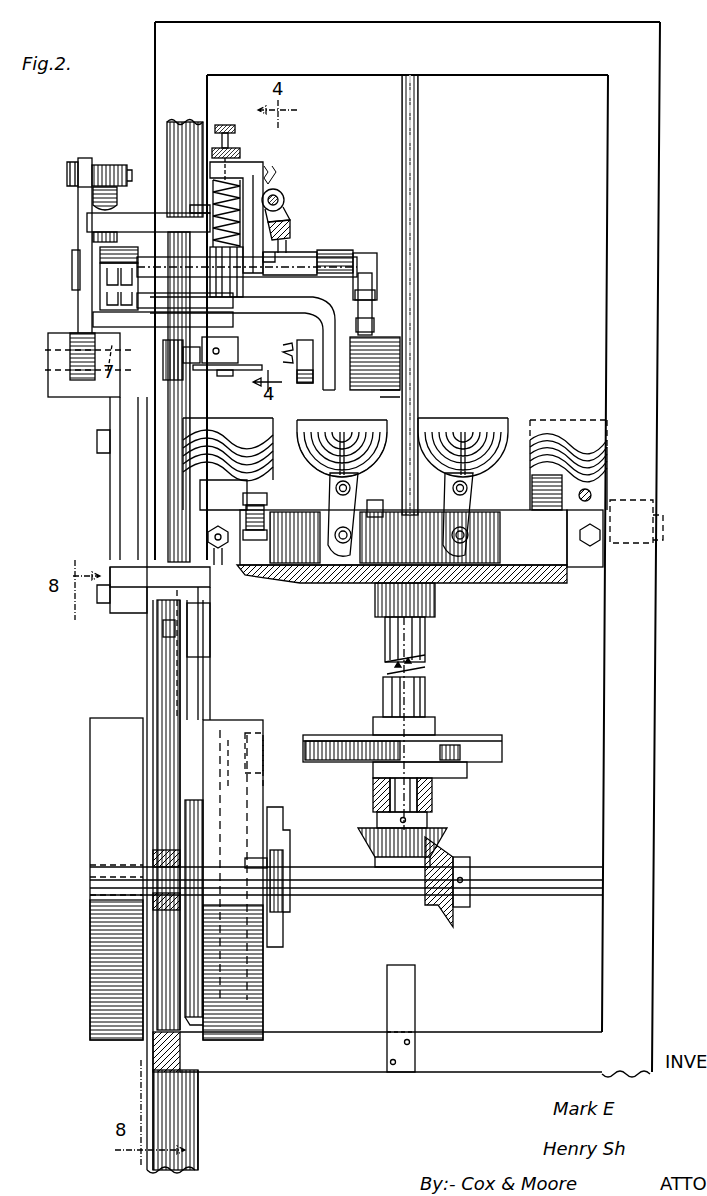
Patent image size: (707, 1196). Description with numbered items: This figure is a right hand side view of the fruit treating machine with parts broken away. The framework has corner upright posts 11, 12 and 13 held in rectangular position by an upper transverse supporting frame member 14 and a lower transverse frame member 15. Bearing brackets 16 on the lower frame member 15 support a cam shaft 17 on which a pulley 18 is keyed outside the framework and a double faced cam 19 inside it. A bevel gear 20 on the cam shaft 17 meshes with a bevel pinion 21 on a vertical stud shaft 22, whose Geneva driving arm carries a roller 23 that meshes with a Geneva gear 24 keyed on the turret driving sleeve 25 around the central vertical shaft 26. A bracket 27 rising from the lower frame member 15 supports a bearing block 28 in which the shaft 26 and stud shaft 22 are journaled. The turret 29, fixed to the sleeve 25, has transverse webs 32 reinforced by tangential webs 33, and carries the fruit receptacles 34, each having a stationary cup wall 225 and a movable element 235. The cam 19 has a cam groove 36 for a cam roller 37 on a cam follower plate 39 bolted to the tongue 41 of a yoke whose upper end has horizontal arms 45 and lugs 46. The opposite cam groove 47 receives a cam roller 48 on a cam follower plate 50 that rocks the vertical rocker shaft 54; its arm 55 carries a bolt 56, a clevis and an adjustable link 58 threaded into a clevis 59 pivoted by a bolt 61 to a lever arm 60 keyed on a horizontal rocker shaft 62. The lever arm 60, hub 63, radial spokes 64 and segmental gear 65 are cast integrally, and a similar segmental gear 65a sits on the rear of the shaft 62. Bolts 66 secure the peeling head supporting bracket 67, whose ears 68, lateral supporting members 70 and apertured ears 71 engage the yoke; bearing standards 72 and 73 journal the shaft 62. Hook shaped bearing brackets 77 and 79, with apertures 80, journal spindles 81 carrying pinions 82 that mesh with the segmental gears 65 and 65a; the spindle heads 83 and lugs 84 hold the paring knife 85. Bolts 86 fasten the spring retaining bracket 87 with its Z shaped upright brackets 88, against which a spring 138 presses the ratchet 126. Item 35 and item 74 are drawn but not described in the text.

The corner upright post 11 is at (656, 101).
The corner upright post 12 is at (172, 121).
The corner upright post 13 is at (168, 58).
The upper transverse supporting frame member 14 is at (560, 80).
The lower transverse frame member 15 is at (548, 1038).
The bearing brackets 16 is at (160, 961).
The cam shaft 17 is at (552, 889).
The pulley 18 is at (105, 920).
The double faced cam 19 is at (245, 1017).
The bevel gear 20 is at (437, 917).
The bevel pinion 21 is at (365, 848).
The vertical stud shaft 22 is at (428, 812).
The roller 23 is at (460, 752).
The Geneva gear 24 is at (490, 735).
The turret driving sleeve 25 is at (426, 694).
The central vertical shaft 26 is at (418, 133).
The bracket 27 is at (416, 990).
The bearing block 28 is at (433, 795).
The turret 29 is at (500, 590).
The transverse webs 32 is at (432, 575).
The tangential webs 33 is at (545, 553).
The receptacles 34 is at (510, 408).
The nut 35 is at (580, 533).
The cam groove 36 is at (212, 737).
The cam roller 37 is at (223, 743).
The cam follower plate 39 is at (190, 676).
The tongue 41 is at (197, 600).
The horizontal arms 45 is at (100, 338).
The lugs 46 is at (100, 328).
The cam groove 47 is at (258, 737).
The cam roller 48 is at (292, 829).
The cam follower plate 50 is at (285, 931).
The vertical rocker shaft 54 is at (200, 578).
The arm 55 is at (100, 222).
The bolt 56 is at (93, 238).
The adjustable link 58 is at (95, 200).
The clevis 59 is at (112, 165).
The lever arm 60 is at (82, 159).
The bolt 61 is at (70, 160).
The horizontal rocker shaft 62 is at (92, 266).
The hub 63 is at (72, 262).
The radial spokes 64 is at (70, 345).
The segmental gear 65 is at (70, 378).
The segmental gear 65a is at (376, 332).
The bolts 66 is at (273, 295).
The peeling head supporting bracket 67 is at (372, 300).
The ears 68 is at (119, 286).
The lateral supporting members 70 is at (150, 297).
The apertured ears 71 is at (290, 300).
The bearing standard 72 is at (112, 250).
The bearing standard 73 is at (338, 258).
The block 74 is at (292, 256).
The hook shaped bearing brackets 77 is at (380, 386).
The hook shaped bearing brackets 79 is at (58, 397).
The apertures 80 is at (108, 368).
The spindles 81 is at (147, 393).
The pinions 82 is at (72, 378).
The heads 83 is at (178, 360).
The lugs 84 is at (292, 366).
The paring knife 85 is at (215, 372).
The bolts 86 is at (300, 280).
The spring retaining bracket 87 is at (266, 162).
The Z shaped upright brackets 88 is at (247, 165).
The ratchet 126 is at (283, 200).
The spring 138 is at (280, 174).
The cup wall 225 is at (455, 425).
The movable element 235 is at (483, 437).